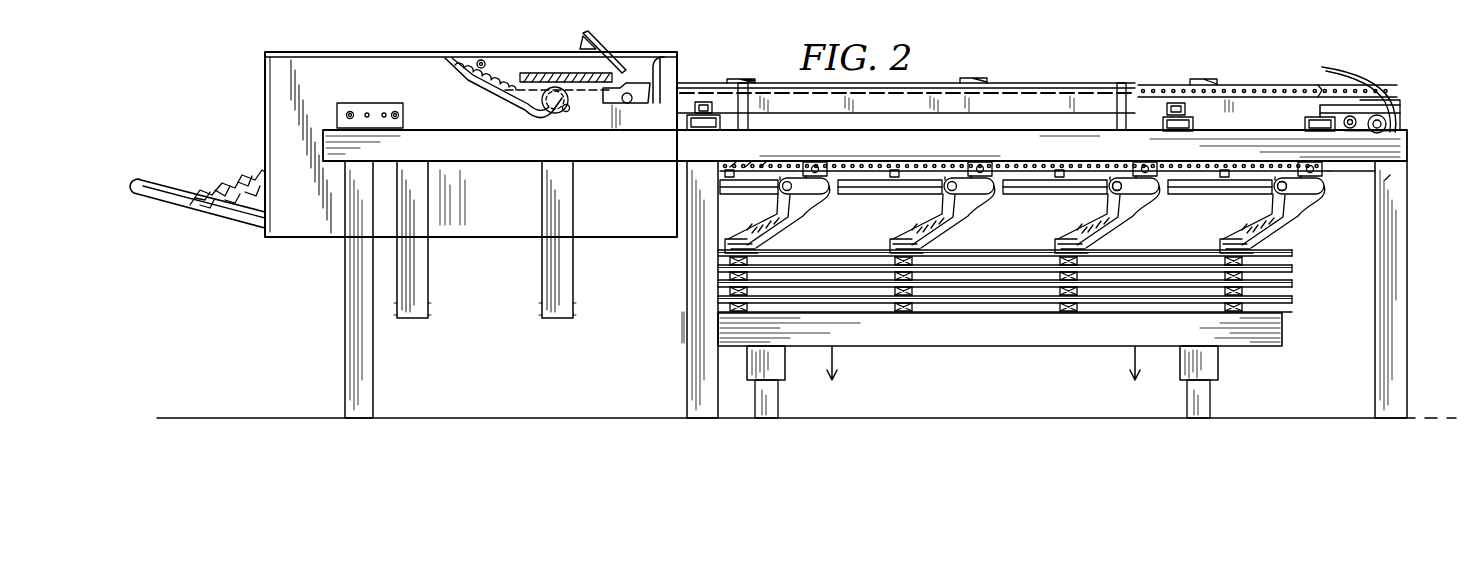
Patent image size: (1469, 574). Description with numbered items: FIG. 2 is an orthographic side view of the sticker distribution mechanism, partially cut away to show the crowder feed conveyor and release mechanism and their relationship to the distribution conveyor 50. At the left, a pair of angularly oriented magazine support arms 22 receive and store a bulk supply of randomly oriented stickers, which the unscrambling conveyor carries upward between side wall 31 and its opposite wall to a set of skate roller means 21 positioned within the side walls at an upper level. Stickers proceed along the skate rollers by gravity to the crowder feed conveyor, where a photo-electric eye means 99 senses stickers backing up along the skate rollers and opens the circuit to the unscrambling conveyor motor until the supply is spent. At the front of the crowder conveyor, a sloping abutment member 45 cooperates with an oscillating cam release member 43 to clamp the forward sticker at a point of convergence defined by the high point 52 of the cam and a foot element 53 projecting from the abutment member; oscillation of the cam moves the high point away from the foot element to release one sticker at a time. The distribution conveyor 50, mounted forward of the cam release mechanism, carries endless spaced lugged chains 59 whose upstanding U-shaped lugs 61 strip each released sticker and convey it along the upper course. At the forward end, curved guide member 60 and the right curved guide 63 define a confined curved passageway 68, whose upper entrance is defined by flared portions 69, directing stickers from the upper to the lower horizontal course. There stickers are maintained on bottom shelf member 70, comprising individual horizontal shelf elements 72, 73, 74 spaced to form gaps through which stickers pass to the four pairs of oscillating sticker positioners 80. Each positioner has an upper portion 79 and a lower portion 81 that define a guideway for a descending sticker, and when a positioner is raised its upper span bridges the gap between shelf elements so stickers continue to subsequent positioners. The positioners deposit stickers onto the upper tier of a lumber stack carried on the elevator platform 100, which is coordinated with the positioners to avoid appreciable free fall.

The skate roller means 21 is at (474, 37).
The magazine support arms 22 is at (166, 182).
The side wall 31 is at (285, 96).
The oscillating cam release member 43 is at (658, 86).
The sloping abutment member 45 is at (596, 42).
The distribution conveyor 50 is at (1119, 71).
The high point 52 is at (632, 82).
The foot element 53 is at (605, 75).
The lugged chains 59 is at (1303, 85).
The curved guide member 60 is at (1388, 89).
The lugs 61 is at (745, 78).
The right curved guide 63 is at (1396, 101).
The confined curved passageway 68 is at (1315, 84).
The flared portions 69 is at (1335, 72).
The bottom shelf member 70 is at (1038, 201).
The shelf element 72 is at (1242, 183).
The shelf element 73 is at (1090, 183).
The shelf element 74 is at (900, 181).
The upper portion 79 is at (1060, 230).
The oscillating sticker positioners 80 is at (899, 227).
The lower portion 81 is at (1140, 205).
The photo-electric eye means 99 is at (485, 62).
The elevator platform 100 is at (1012, 351).